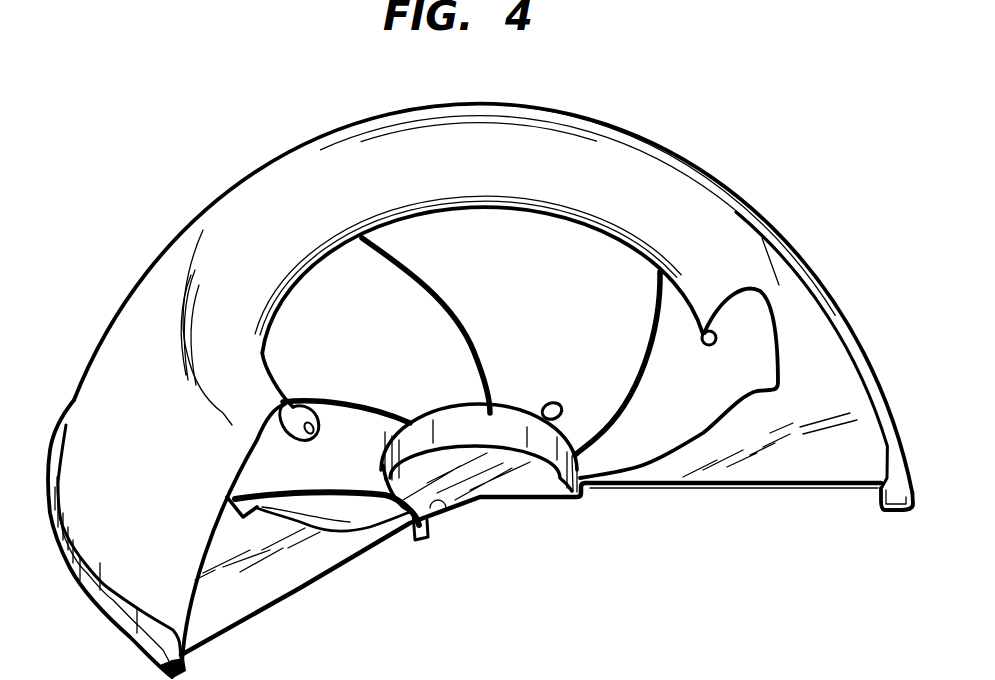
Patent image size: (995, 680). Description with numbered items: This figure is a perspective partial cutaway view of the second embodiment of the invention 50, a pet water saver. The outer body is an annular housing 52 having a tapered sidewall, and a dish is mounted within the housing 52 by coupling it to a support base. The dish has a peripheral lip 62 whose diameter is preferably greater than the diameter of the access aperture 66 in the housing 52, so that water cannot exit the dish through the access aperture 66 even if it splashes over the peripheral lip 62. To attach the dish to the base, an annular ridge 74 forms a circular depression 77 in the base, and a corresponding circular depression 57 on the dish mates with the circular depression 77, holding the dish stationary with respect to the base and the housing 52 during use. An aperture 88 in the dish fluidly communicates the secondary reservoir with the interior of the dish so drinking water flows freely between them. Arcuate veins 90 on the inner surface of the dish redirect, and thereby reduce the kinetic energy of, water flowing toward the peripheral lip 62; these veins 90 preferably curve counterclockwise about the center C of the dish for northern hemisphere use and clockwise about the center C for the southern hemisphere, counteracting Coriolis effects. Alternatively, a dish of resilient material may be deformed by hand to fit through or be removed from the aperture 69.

The second embodiment of the invention 50 is at (748, 135).
The annular housing 52 is at (160, 253).
The circular depression 57 is at (491, 443).
The peripheral lip 62 is at (763, 373).
The access aperture 66 is at (500, 230).
The aperture 69 is at (602, 210).
The annular ridge 74 is at (408, 513).
The circular depression 77 is at (446, 515).
The aperture 88 is at (572, 410).
The arcuate veins 90 is at (645, 350).
The center of dish C is at (485, 485).